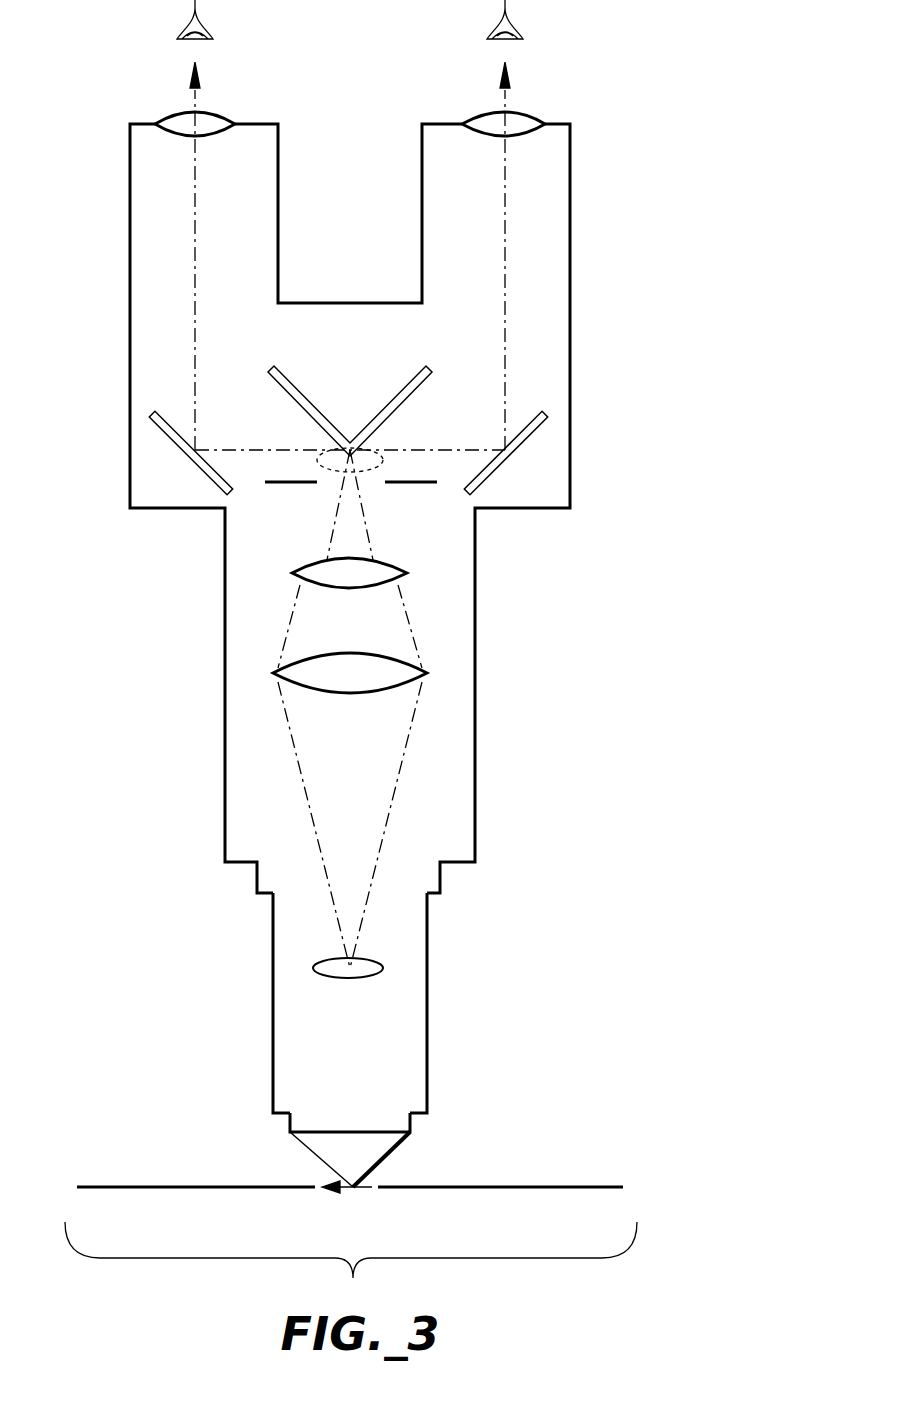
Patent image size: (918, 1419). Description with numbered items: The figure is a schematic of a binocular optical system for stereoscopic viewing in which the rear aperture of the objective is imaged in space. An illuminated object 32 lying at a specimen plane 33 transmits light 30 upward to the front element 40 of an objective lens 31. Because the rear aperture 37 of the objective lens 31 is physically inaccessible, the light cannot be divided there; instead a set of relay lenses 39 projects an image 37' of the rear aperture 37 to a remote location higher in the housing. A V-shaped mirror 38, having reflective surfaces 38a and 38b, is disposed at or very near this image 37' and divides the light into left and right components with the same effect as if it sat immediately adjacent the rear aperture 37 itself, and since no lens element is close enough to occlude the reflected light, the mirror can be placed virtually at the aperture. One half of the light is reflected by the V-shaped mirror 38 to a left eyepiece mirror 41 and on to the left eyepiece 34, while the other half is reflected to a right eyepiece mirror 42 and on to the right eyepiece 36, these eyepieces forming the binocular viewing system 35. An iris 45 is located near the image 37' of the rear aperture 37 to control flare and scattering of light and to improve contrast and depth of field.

The light 30 is at (330, 1150).
The objective lens 31 is at (434, 1013).
The illuminated object 32 is at (362, 1190).
The specimen plane 33 is at (478, 1186).
The left eyepiece 34 is at (177, 121).
The binocular viewing system 35 is at (417, 219).
The right eyepiece 36 is at (525, 121).
The rear aperture 37 is at (408, 947).
The image of the rear aperture 37' is at (375, 500).
The V-shaped mirror 38 is at (348, 438).
The reflective surface 38a is at (300, 383).
The reflective surface 38b is at (399, 383).
The relay lenses 39 is at (430, 620).
The front element 40 is at (398, 1124).
The left eyepiece mirror 41 is at (178, 450).
The right eyepiece mirror 42 is at (533, 440).
The iris 45 is at (280, 486).